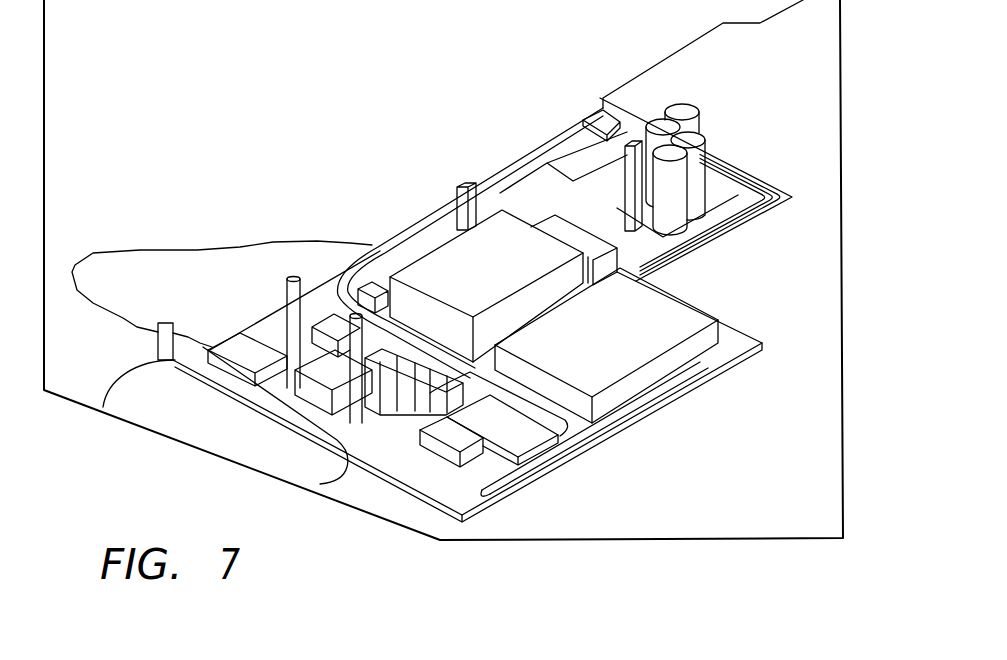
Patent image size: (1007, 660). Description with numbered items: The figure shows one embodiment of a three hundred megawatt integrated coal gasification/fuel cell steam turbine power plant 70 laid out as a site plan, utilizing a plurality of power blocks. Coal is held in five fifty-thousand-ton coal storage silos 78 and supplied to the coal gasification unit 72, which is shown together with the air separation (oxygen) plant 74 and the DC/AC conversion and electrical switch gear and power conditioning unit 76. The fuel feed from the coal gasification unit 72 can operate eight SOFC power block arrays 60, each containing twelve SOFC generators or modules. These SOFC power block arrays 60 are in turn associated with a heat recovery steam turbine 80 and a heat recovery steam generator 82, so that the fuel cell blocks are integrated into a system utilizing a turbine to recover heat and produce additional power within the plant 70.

The integrated coal gasification/fuel cell steam turbine power plant 70 is at (306, 140).
The SOFC power block array 60 is at (333, 320).
The coal gasification unit 72 is at (424, 273).
The air separation (oxygen) plant 74 is at (620, 367).
The DC/AC conversion and electrical switch gear and power conditioning unit 76 is at (527, 440).
The coal storage silos 78 is at (697, 127).
The heat recovery steam turbine 80 is at (315, 396).
The heat recovery steam generator 82 is at (377, 415).